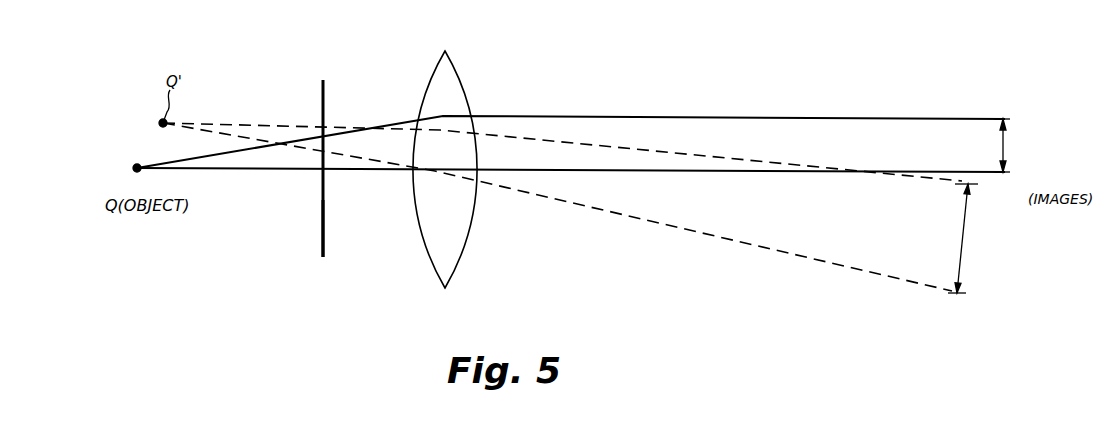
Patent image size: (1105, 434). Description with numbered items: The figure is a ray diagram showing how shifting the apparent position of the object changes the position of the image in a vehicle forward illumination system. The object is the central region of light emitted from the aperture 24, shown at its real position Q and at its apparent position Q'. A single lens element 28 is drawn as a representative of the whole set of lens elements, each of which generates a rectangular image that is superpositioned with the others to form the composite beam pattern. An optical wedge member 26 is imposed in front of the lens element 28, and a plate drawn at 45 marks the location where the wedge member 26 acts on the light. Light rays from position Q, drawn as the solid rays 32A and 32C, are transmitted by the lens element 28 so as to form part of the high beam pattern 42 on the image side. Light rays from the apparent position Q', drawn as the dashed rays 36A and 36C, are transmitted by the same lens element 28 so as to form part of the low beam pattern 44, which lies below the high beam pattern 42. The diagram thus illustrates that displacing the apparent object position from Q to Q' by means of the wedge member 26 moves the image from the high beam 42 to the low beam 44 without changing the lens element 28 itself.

The aperture 24 is at (110, 112).
The aperture plate 45 is at (323, 80).
The optical wedge member 26 is at (323, 255).
The lens element 28 is at (455, 63).
The high beam axial ray 32A is at (393, 123).
The high beam chief ray 32C is at (683, 155).
The low beam axial ray 36A is at (352, 172).
The low beam chief ray 36C is at (707, 236).
The high beam pattern 42 is at (997, 145).
The low beam pattern 44 is at (952, 238).